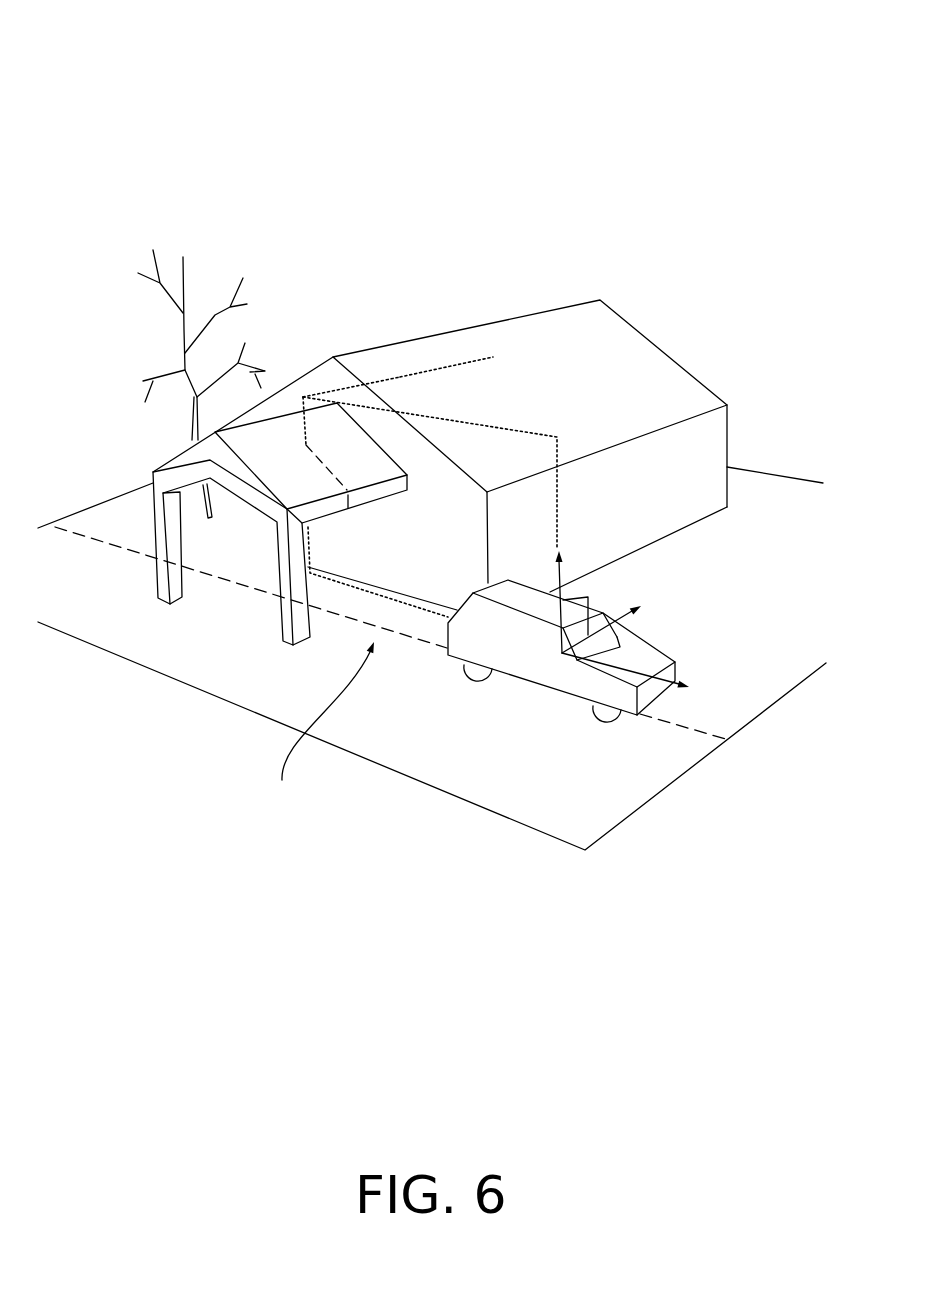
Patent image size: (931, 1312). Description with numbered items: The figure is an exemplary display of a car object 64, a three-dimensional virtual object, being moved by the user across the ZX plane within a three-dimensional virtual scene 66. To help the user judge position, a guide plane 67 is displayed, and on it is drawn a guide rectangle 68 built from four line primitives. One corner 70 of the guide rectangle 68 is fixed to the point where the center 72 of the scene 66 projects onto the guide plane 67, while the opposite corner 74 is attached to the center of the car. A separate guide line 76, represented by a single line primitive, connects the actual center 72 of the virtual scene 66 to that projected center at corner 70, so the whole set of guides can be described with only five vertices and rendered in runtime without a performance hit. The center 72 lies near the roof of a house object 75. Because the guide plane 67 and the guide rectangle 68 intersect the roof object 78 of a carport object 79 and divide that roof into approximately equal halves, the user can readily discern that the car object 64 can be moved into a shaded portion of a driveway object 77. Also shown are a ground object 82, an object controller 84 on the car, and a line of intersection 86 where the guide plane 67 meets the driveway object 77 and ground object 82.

The 3D virtual scene 66 is at (127, 108).
The car object 64 is at (530, 673).
The guide plane 67 is at (347, 618).
The guide rectangle 68 is at (507, 429).
The corner 70 is at (301, 398).
The center 72 is at (493, 357).
The opposite corner 74 is at (558, 658).
The house object 75 is at (727, 428).
The guide line 76 is at (398, 376).
The driveway object 77 is at (319, 725).
The roof object 78 is at (270, 443).
The carport object 79 is at (148, 487).
The ground object 82 is at (783, 502).
The object controller 84 is at (615, 612).
The line of intersection 86 is at (678, 722).